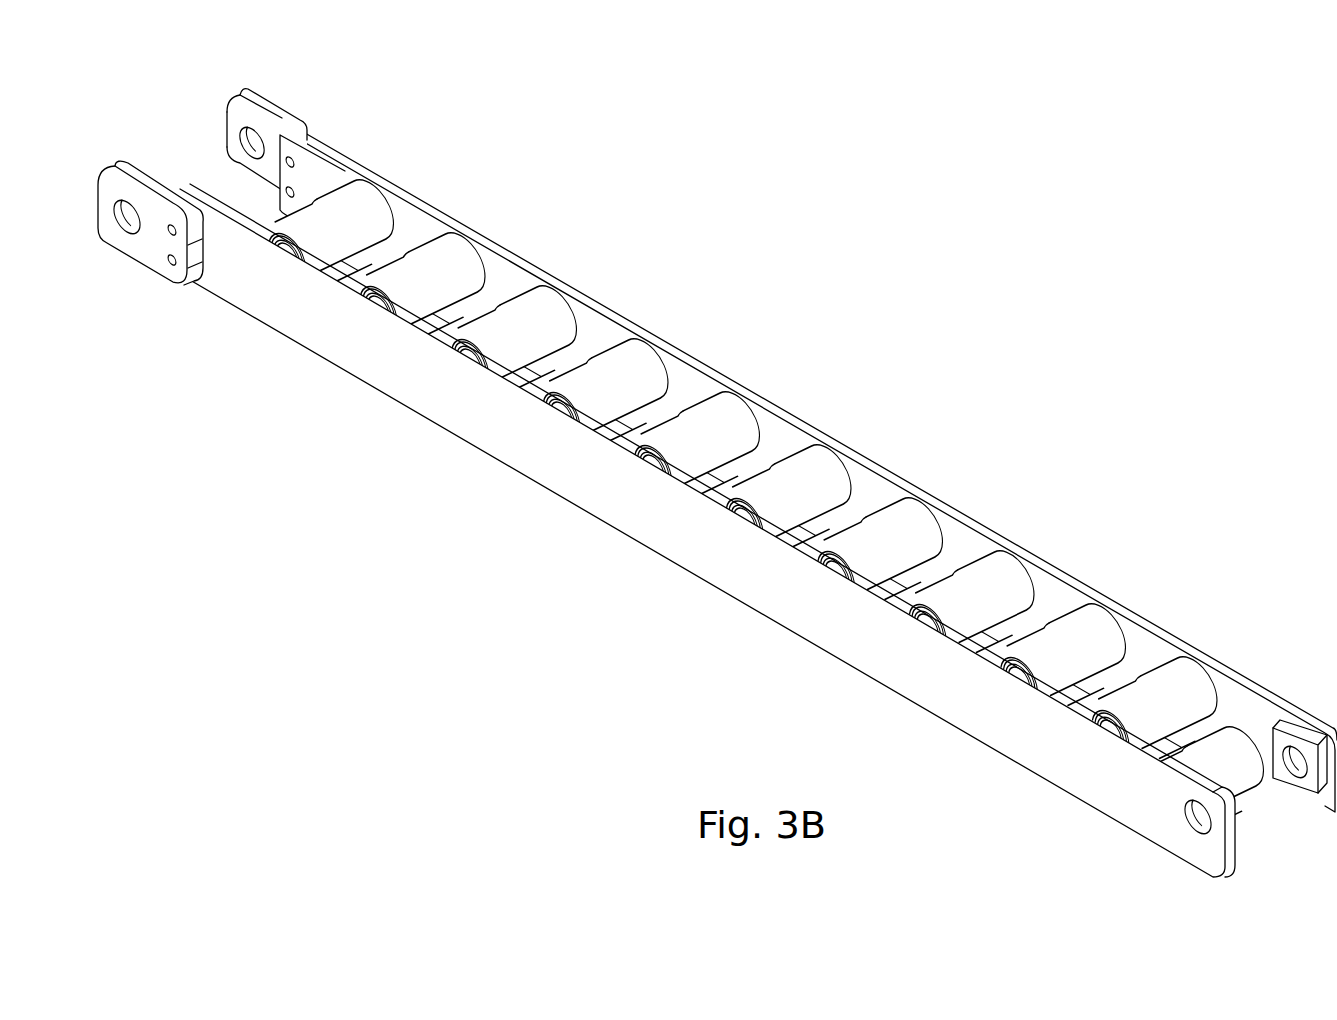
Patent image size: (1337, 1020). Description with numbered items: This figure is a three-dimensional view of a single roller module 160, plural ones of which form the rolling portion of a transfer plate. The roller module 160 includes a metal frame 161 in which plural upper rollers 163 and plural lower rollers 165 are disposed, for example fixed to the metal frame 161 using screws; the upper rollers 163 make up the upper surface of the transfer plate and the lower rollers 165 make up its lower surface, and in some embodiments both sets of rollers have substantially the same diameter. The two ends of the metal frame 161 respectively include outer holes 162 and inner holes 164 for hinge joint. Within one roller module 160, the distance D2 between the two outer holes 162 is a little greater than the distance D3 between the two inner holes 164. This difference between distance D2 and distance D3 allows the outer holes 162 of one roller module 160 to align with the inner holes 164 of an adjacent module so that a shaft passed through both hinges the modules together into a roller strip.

The roller module 160 is at (717, 463).
The metal frame 161 is at (1193, 658).
The outer holes 162 is at (258, 148).
The upper rollers 163 is at (1095, 632).
The inner holes 164 is at (1195, 822).
The lower rollers 165 is at (706, 538).
The distance between the two outer holes D2 is at (257, 113).
The distance between the two inner holes D3 is at (1317, 787).